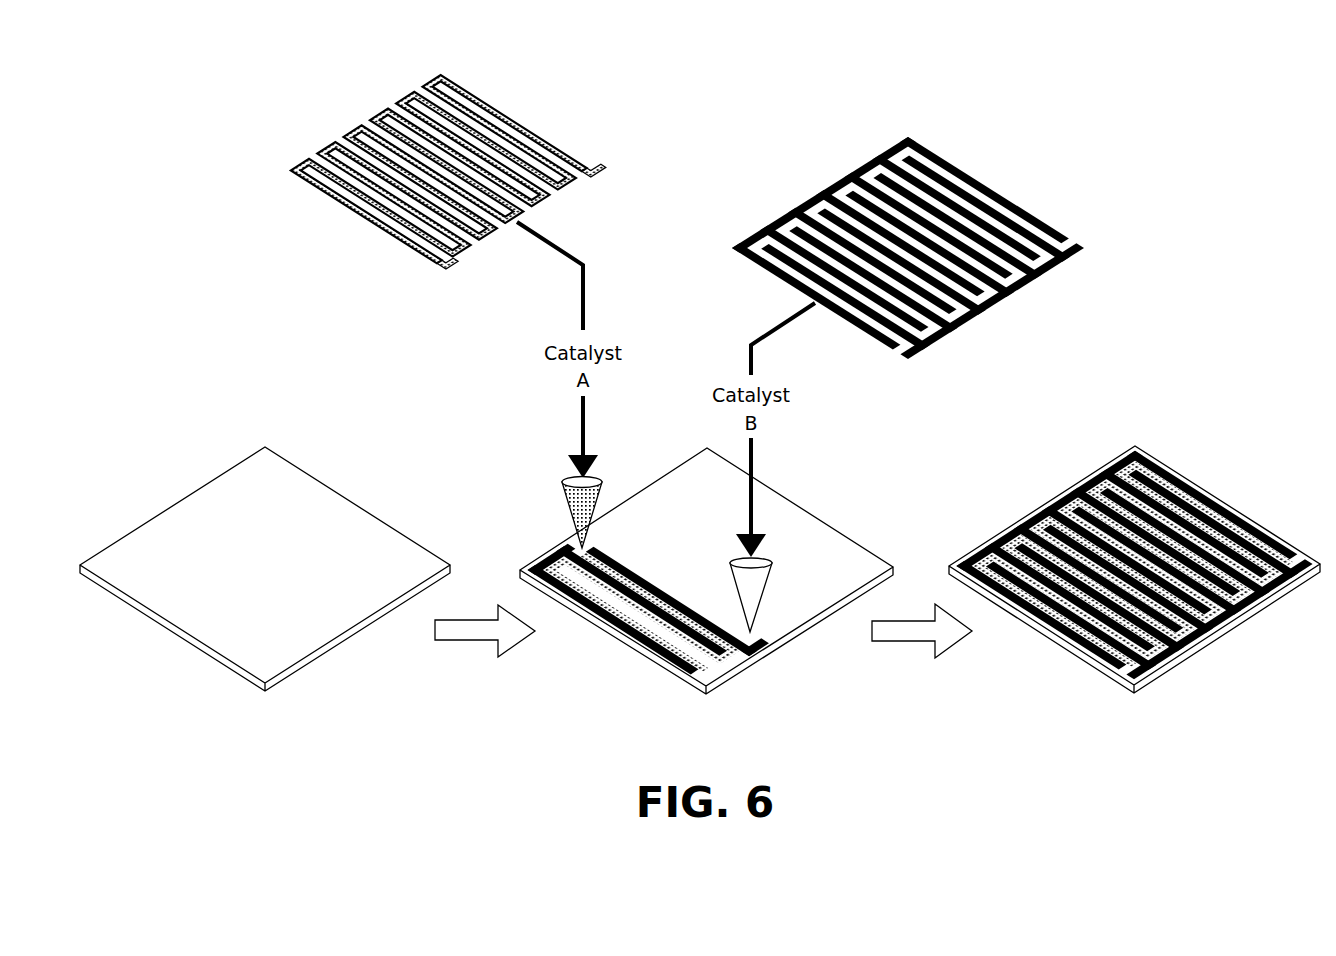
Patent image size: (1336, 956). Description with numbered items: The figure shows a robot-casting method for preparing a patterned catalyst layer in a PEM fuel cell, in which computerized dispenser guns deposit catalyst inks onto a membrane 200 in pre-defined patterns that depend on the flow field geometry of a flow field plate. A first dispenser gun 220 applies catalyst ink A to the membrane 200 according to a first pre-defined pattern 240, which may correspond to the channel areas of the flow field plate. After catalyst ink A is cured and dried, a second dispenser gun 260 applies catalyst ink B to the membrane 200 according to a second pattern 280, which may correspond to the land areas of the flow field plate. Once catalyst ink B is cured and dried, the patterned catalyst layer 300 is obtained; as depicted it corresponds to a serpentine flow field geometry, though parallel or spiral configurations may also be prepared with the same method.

The membrane 200 is at (185, 498).
The first dispenser gun 220 is at (570, 512).
The first pre-defined pattern 240 is at (342, 126).
The second dispenser gun 260 is at (767, 595).
The second pattern 280 is at (993, 187).
The patterned catalyst layer 300 is at (1225, 498).